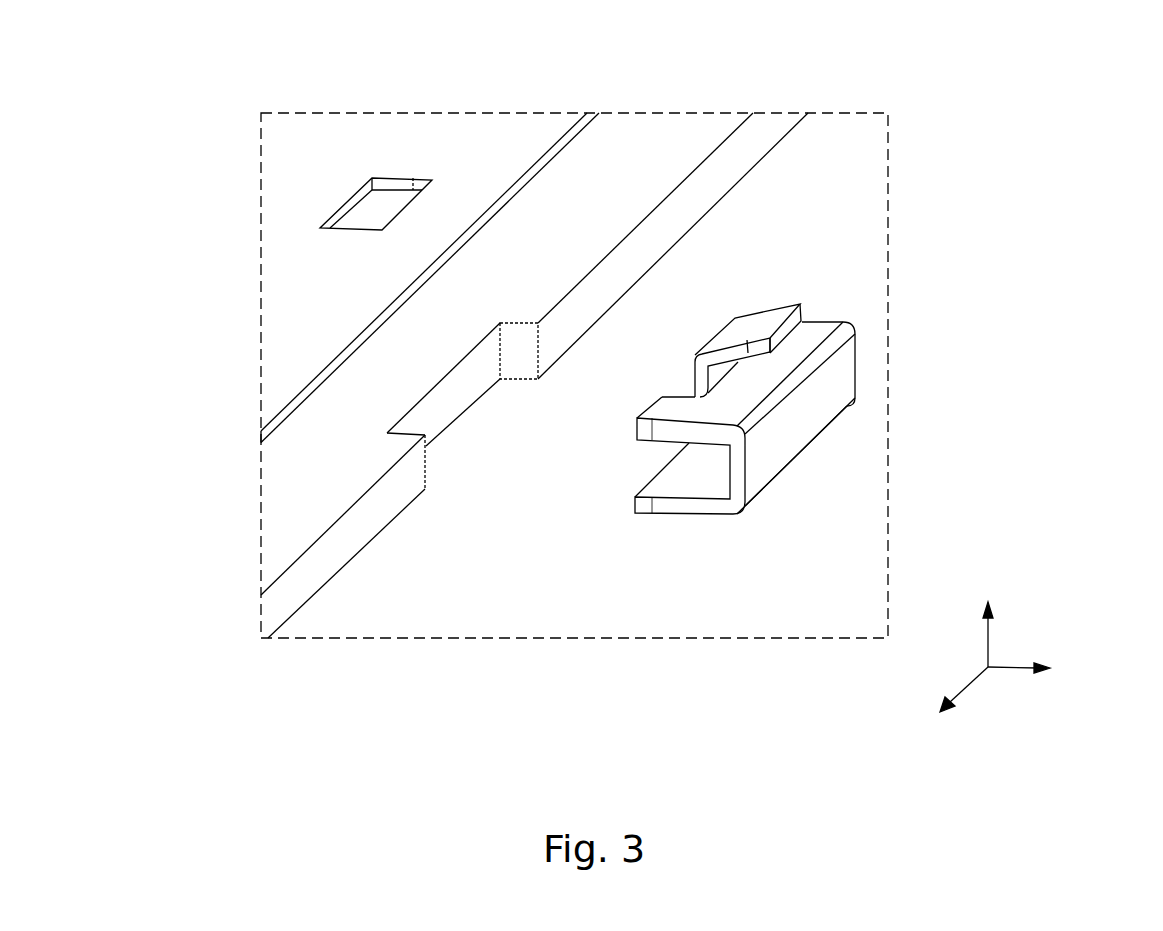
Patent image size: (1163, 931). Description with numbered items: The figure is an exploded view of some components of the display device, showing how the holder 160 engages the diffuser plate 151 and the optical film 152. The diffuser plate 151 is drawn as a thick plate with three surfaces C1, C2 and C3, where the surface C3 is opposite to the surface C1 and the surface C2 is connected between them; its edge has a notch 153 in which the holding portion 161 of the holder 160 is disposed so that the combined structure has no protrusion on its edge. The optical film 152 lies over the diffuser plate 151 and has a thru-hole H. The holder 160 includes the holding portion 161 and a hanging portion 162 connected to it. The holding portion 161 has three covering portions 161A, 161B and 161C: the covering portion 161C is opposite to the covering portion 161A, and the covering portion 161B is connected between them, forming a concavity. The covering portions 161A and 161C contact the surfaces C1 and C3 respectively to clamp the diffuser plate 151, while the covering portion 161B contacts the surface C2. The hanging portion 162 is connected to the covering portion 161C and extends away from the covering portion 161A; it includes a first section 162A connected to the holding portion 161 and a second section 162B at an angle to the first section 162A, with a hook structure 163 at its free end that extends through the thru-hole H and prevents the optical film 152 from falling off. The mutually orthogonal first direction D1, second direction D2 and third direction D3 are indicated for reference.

The diffuser plate 151 is at (534, 345).
The optical film 152 is at (482, 140).
The notch 153 is at (460, 437).
The holder 160 is at (845, 341).
The holding portion 161 is at (896, 341).
The covering portion 161A is at (682, 510).
The covering portion 161B is at (763, 470).
The covering portion 161C is at (777, 370).
The hanging portion 162 is at (871, 297).
The first section 162A is at (702, 378).
The second section 162B is at (758, 298).
The hook structure 163 is at (753, 322).
The thru-hole H is at (383, 203).
The surface C1 is at (356, 567).
The surface C2 is at (278, 612).
The surface C3 is at (296, 548).
The first direction D1 is at (990, 619).
The second direction D2 is at (1042, 671).
The third direction D3 is at (944, 705).